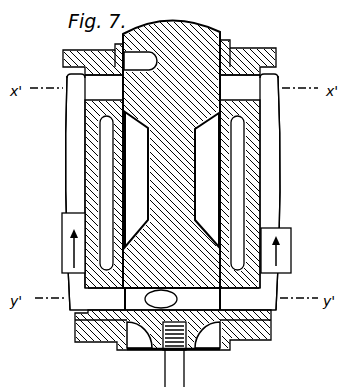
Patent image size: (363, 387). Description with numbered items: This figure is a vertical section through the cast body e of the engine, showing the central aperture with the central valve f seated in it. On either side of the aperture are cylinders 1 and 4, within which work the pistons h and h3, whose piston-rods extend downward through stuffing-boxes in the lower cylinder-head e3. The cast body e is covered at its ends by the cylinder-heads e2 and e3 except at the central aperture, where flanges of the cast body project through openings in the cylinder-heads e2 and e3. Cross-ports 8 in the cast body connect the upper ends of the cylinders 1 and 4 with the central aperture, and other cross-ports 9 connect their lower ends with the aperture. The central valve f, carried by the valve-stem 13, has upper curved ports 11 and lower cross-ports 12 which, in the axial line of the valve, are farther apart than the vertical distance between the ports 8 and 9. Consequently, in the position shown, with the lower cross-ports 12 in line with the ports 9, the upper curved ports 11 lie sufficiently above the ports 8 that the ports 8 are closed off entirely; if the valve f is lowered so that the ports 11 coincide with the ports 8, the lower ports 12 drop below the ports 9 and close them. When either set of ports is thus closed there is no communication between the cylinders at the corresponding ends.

The cylinder 1 is at (85, 163).
The cylinder 4 is at (262, 173).
The cross-ports 8 is at (172, 181).
The cross-ports 9 is at (173, 299).
The upper curved ports 11 is at (140, 61).
The lower cross-ports 12 is at (172, 299).
The valve-stem 13 is at (133, 373).
The cast body e is at (266, 138).
The cylinder-head e2 is at (270, 49).
The cylinder-head e3 is at (262, 341).
The central valve f is at (210, 28).
The piston h is at (63, 248).
The piston h3 is at (291, 254).